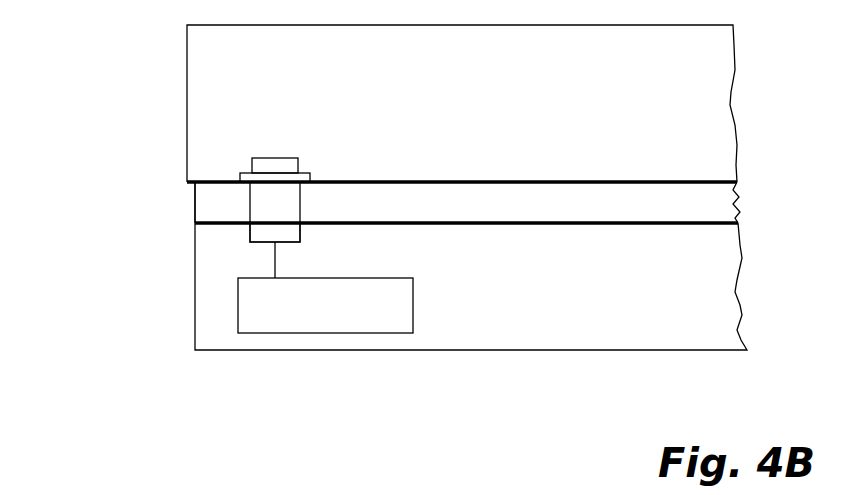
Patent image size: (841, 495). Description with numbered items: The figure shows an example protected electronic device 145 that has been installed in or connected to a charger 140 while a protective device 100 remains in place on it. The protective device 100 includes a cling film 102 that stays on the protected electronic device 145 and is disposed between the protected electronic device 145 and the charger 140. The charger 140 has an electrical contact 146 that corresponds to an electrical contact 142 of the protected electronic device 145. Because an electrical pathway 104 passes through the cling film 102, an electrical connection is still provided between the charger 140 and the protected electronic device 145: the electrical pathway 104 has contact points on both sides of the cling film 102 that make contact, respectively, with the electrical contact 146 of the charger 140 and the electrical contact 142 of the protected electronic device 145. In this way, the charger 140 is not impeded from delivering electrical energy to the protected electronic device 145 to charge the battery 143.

The protective device 100 is at (662, 209).
The cling film 102 is at (208, 197).
The electrical pathway 104 is at (277, 201).
The charger 140 is at (462, 103).
The electrical contacts 142 is at (268, 232).
The battery 143 is at (325, 305).
The protected electronic device 145 is at (471, 266).
The electrical contacts 146 is at (275, 168).